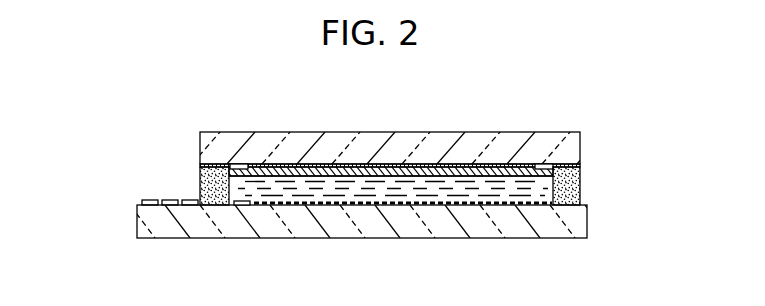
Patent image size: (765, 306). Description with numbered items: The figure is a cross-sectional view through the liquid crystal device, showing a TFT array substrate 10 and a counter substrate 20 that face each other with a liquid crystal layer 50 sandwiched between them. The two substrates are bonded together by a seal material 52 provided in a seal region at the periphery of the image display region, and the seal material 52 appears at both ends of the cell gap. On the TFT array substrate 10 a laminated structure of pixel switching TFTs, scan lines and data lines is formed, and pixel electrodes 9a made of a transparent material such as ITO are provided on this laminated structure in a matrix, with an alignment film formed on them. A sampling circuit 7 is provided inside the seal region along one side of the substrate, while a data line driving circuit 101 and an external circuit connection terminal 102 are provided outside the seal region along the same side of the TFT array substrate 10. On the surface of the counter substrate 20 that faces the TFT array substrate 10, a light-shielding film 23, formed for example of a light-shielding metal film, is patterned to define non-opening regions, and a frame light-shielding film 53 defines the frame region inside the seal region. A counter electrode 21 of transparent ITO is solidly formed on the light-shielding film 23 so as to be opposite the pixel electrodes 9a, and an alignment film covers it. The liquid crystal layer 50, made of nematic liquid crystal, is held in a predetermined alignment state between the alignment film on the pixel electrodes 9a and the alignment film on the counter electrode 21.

The TFT array substrate 10 is at (413, 228).
The counter substrate 20 is at (321, 132).
The counter electrode 21 is at (467, 167).
The light-shielding film 23 is at (391, 164).
The frame light-shielding film 53 is at (234, 165).
The seal material 52 is at (200, 178).
The liquid crystal layer 50 is at (345, 193).
The sampling circuit 7 is at (236, 206).
The pixel electrodes 9a is at (271, 206).
The data line driving circuit 101 is at (188, 200).
The external circuit connection terminal 102 is at (141, 200).